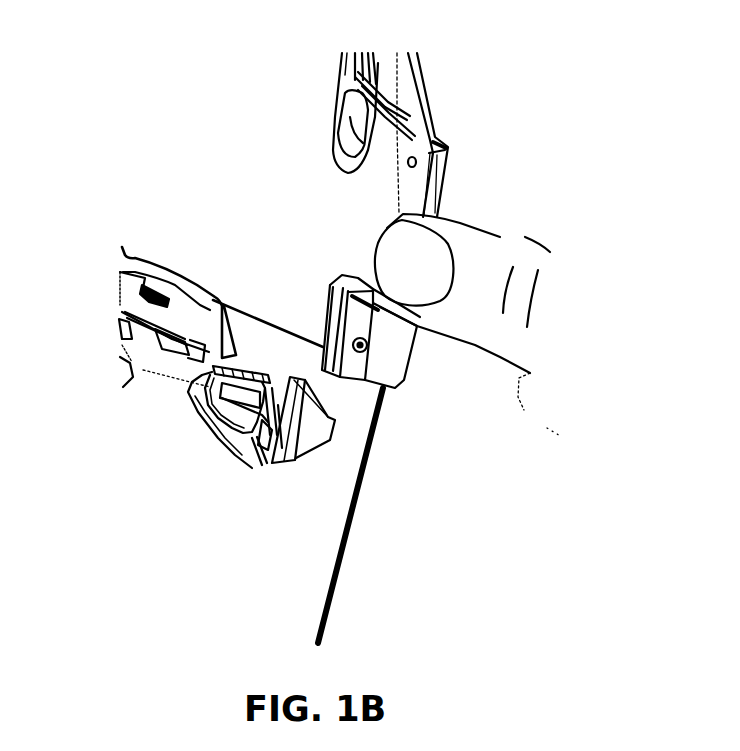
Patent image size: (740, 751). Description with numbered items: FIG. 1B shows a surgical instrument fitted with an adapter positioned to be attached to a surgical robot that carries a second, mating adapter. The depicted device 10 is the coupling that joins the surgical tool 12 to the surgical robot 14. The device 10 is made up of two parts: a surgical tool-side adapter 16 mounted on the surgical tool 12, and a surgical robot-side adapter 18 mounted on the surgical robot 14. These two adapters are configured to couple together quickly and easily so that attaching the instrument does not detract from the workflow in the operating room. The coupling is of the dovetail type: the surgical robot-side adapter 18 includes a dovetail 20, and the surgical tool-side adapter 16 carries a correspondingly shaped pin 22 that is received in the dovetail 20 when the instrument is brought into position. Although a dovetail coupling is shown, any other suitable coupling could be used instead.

The device 10 is at (478, 545).
The surgical tool 12 is at (332, 137).
The surgical robot 14 is at (207, 417).
The surgical tool-side adapter 16 is at (387, 290).
The surgical robot-side adapter 18 is at (290, 363).
The dovetail 20 is at (322, 442).
The pin 22 is at (330, 283).